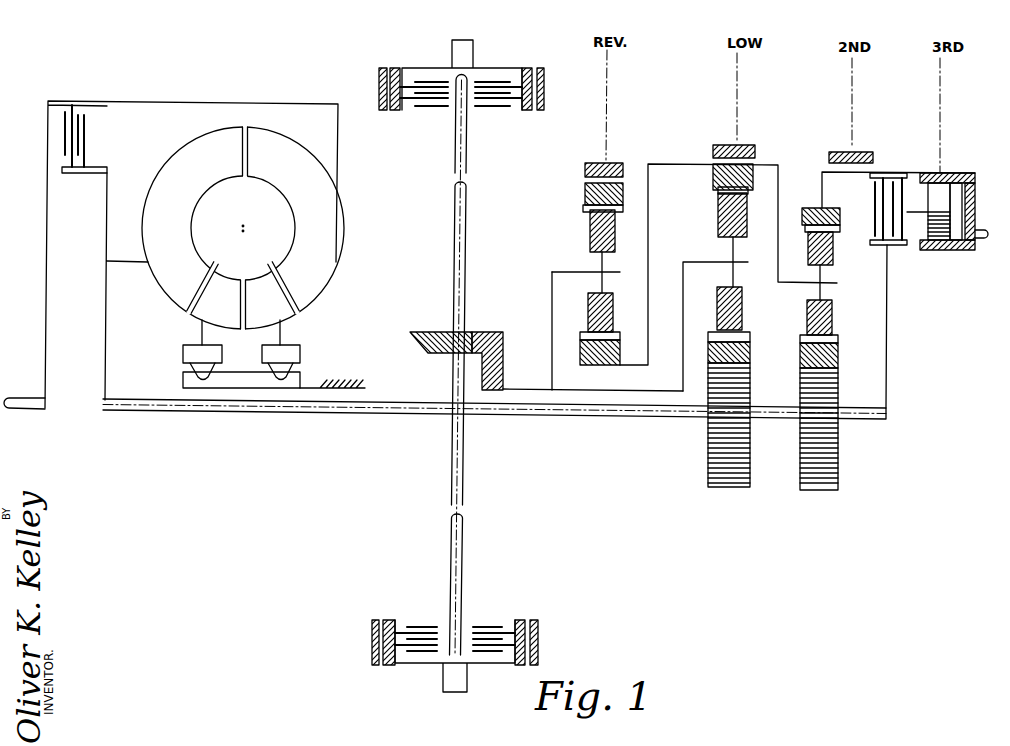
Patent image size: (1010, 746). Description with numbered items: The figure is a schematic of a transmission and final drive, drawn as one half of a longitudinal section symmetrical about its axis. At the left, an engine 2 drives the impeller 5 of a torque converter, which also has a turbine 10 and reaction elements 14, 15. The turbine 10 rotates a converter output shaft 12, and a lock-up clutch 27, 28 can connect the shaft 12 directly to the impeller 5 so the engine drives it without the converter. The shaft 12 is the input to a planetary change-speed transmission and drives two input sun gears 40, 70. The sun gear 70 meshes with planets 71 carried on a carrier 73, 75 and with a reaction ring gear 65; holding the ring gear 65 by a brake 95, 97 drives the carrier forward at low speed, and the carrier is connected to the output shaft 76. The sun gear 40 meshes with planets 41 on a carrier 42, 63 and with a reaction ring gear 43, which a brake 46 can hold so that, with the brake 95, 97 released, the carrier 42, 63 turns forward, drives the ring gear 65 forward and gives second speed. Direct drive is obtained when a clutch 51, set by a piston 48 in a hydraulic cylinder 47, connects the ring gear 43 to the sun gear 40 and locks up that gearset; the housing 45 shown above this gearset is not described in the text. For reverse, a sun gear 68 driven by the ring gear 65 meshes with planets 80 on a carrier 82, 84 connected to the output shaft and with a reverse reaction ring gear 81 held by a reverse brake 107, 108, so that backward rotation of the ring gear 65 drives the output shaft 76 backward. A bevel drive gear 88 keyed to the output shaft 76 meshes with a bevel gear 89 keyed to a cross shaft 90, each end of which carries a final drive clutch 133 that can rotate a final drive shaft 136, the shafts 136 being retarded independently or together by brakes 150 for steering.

The engine 2 is at (25, 410).
The impeller 5 is at (303, 155).
The turbine 10 is at (197, 147).
The converter output shaft 12 is at (217, 413).
The reaction element 14 is at (197, 313).
The reaction element 15 is at (284, 313).
The lock-up clutch 27 is at (84, 142).
The lock-up clutch 28 is at (84, 111).
The input sun gear 40 is at (813, 490).
The planets 41 is at (830, 260).
The carrier 42 is at (793, 283).
The reaction ring gear 43 is at (805, 208).
The housing 45 is at (822, 170).
The brake 46 is at (862, 152).
The hydraulic cylinder 47 is at (950, 250).
The piston 48 is at (957, 178).
The clutch 51 is at (902, 217).
The carrier 63 is at (773, 233).
The reaction ring gear 65 is at (712, 177).
The input sun gear 68 is at (580, 348).
The input sun gear 70 is at (723, 487).
The planets 71 is at (740, 238).
The carrier 73 is at (698, 262).
The carrier 75 is at (683, 310).
The output shaft 76 is at (527, 388).
The planets 80 is at (612, 294).
The reverse reaction ring gear 81 is at (585, 195).
The carrier 82 is at (568, 272).
The carrier 84 is at (552, 293).
The bevel drive gear 88 is at (505, 342).
The bevel gear 89 is at (425, 332).
The cross shaft 90 is at (458, 520).
The brake 95 is at (720, 145).
The brake 97 is at (713, 148).
The reverse brake 107 is at (585, 163).
The reverse brake 108 is at (585, 168).
The final drive clutch 133 is at (492, 110).
The final drive shaft 136 is at (473, 53).
The brake 150 is at (543, 108).